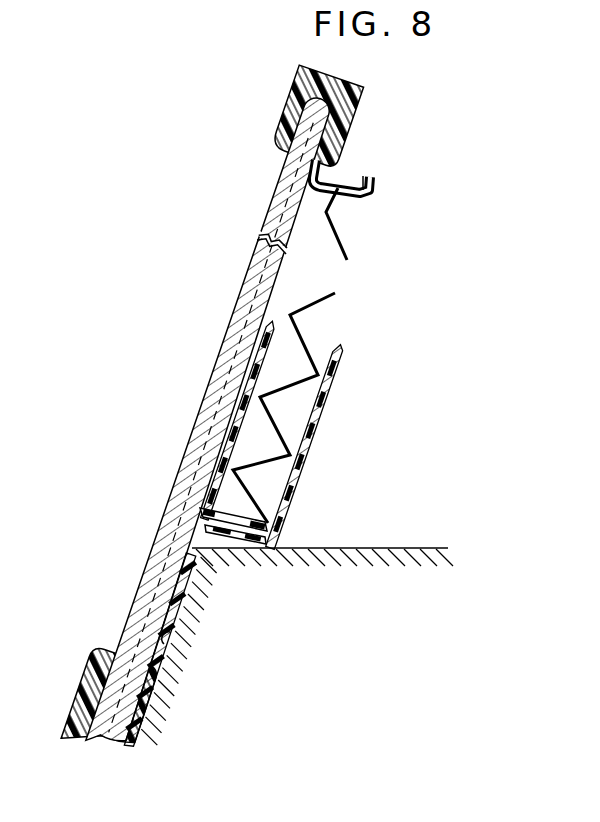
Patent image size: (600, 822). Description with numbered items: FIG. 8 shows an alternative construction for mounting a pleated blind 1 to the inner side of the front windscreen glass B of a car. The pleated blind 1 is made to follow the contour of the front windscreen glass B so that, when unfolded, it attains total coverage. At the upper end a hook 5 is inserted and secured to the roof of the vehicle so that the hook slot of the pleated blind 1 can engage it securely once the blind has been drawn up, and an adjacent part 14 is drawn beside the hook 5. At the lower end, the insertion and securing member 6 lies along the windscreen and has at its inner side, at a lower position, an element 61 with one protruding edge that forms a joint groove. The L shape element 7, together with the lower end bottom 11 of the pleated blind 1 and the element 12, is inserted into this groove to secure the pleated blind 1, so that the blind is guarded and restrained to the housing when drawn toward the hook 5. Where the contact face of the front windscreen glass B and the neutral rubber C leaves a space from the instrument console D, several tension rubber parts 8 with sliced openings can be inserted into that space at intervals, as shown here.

The neutral rubber C is at (292, 108).
The front windscreen glass B is at (258, 290).
The pleated blind 1 is at (302, 332).
The hook 5 is at (374, 188).
The insertion and securing member 6 is at (232, 422).
The L shape element 7 is at (338, 388).
The tension rubber parts 8 is at (170, 640).
The lower end bottom 11 is at (244, 552).
The element 12 is at (248, 524).
The lever 14 is at (345, 212).
The element with one protruding edge 61 is at (240, 516).
The instrument console D is at (414, 547).